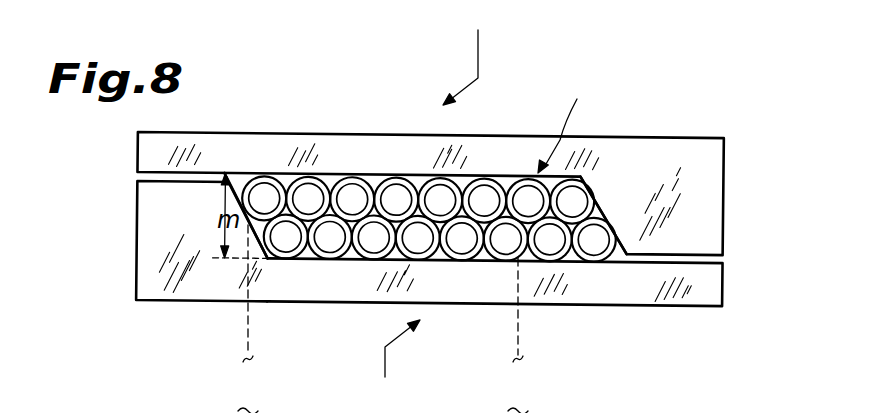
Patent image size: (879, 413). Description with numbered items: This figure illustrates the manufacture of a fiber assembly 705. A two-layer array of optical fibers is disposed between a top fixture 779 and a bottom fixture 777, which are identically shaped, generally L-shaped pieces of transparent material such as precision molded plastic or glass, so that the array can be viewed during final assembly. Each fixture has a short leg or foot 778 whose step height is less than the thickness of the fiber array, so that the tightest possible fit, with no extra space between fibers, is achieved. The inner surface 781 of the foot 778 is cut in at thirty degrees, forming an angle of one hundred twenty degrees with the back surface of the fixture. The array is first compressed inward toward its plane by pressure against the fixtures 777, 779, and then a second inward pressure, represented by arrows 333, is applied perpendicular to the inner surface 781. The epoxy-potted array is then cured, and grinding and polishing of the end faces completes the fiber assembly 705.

The arrows 333 is at (478, 78).
The fiber assembly 705 is at (284, 265).
The bottom fixture 777 is at (723, 283).
The foot 778 is at (137, 225).
The top fixture 779 is at (723, 203).
The inner surface 781 is at (258, 238).